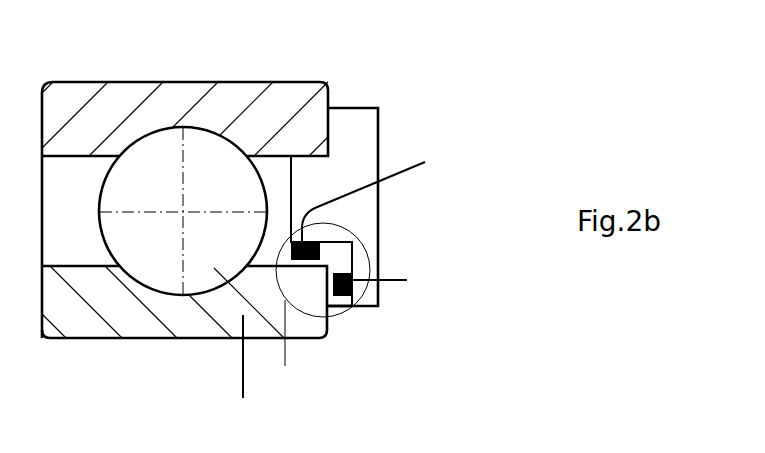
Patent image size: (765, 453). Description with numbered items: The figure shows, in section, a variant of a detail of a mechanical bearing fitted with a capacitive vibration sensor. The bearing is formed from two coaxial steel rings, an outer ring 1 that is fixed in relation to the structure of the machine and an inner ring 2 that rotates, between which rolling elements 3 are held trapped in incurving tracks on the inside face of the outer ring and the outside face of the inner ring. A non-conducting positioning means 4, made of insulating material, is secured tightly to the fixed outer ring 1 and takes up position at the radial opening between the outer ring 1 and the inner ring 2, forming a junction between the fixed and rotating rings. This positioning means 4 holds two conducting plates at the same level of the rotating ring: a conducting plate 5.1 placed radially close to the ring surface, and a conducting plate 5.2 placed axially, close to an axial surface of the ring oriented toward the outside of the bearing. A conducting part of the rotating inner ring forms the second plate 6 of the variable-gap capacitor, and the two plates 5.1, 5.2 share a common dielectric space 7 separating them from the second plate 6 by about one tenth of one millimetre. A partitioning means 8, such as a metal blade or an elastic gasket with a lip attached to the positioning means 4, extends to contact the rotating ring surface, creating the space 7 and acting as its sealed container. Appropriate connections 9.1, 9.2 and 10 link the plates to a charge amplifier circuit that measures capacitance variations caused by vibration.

The outer ring 1 is at (309, 83).
The inner ring 2 is at (135, 328).
The rolling elements 3 is at (209, 134).
The non-conducting positioning means 4 is at (376, 134).
The conducting plate 5.1 is at (332, 233).
The conducting plate 5.2 is at (369, 296).
The second plate 6 is at (323, 276).
The space 7 is at (361, 244).
The partitioning means 8 is at (351, 323).
The connection 9.1 is at (436, 150).
The connection 9.2 is at (422, 276).
The connection 10 is at (226, 367).